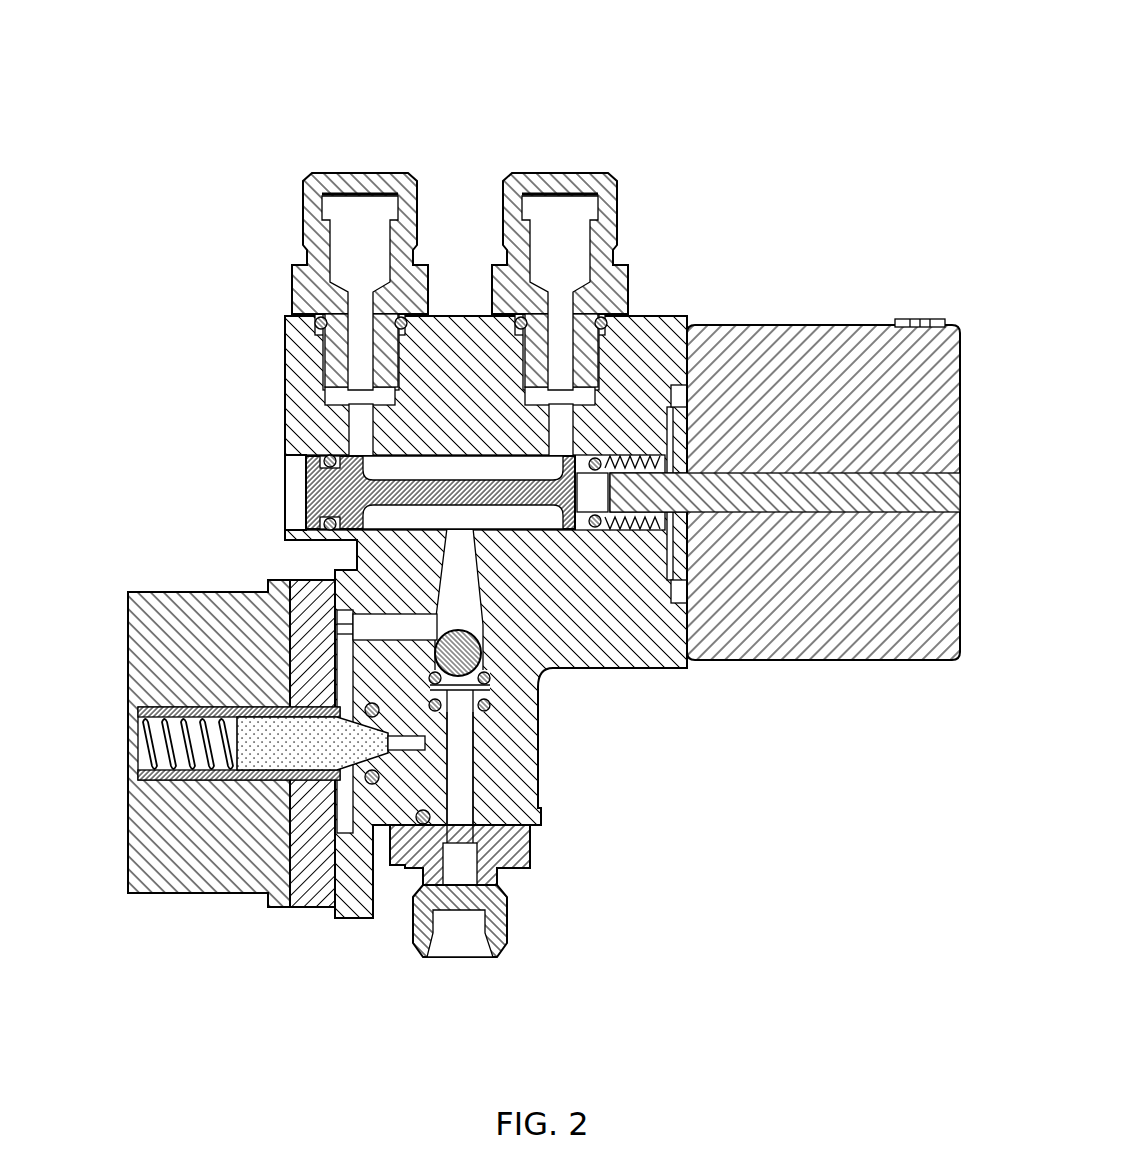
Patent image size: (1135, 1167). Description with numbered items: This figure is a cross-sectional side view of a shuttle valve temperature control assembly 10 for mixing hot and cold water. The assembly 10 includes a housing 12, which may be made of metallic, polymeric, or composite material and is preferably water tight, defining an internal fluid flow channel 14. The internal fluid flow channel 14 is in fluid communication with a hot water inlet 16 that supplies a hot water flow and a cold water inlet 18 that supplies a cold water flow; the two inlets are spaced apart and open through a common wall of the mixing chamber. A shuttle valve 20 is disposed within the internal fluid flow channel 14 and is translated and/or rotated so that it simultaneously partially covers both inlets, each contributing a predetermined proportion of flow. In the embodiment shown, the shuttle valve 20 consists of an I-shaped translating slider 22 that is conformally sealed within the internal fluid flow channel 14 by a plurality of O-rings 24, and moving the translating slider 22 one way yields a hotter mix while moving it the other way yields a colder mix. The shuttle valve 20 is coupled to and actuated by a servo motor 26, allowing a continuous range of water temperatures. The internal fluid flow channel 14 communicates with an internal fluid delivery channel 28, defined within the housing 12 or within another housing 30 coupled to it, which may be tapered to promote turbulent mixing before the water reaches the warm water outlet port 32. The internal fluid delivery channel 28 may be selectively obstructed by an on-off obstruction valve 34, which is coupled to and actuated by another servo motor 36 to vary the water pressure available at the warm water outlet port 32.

The shuttle valve temperature control assembly 10 is at (660, 197).
The housing 12 is at (660, 307).
The internal fluid flow channel 14 is at (326, 399).
The hot water inlet 16 is at (362, 162).
The cold water inlet 18 is at (566, 162).
The shuttle valve 20 is at (398, 470).
The translating slider 22 is at (308, 470).
The O-rings 24 is at (323, 453).
The servo motor 26 is at (812, 317).
The internal fluid delivery channel 28 is at (495, 710).
The housing 30 is at (543, 777).
The warm water outlet port 32 is at (513, 922).
The obstruction valve 34 is at (232, 782).
The servo motor 36 is at (210, 903).